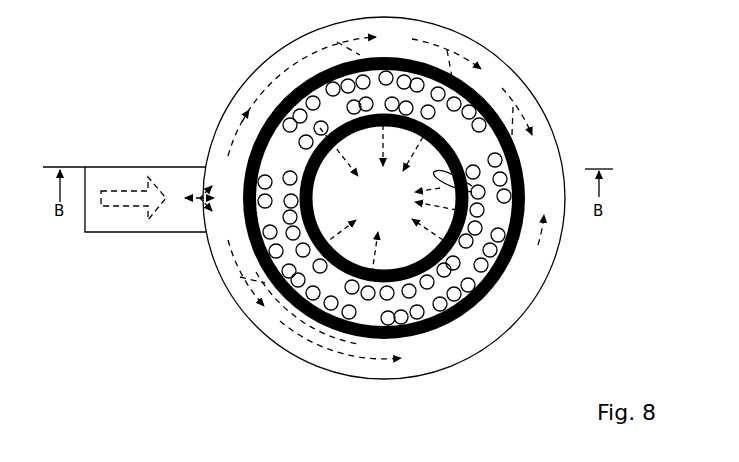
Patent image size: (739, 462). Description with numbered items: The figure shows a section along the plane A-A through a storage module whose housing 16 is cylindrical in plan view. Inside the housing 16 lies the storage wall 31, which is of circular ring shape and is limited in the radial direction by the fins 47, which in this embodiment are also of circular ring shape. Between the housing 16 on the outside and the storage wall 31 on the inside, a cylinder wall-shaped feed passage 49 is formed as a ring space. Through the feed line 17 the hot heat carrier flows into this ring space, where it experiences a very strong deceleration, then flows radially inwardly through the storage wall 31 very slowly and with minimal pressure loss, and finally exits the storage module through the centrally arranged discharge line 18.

The housing 16 is at (492, 53).
The feed line 17 is at (121, 167).
The discharge line 18 is at (393, 207).
The storage wall 31 is at (486, 124).
The fins 47 is at (522, 162).
The feed passage 49 is at (540, 125).